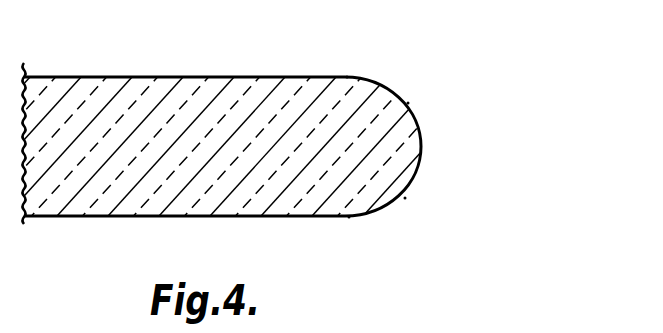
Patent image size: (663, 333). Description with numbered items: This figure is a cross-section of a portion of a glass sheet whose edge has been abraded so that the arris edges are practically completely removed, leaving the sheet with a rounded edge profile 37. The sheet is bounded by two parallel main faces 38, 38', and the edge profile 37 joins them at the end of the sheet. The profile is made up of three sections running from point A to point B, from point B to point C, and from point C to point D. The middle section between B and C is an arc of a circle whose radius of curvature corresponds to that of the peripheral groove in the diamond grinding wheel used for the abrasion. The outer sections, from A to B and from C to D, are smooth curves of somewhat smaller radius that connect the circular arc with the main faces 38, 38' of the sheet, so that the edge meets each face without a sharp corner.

The edge profile 37 is at (422, 150).
The main face 38 is at (184, 43).
The main face 38' is at (184, 246).
The point A is at (349, 217).
The point B is at (405, 198).
The point C is at (408, 103).
The point D is at (347, 77).